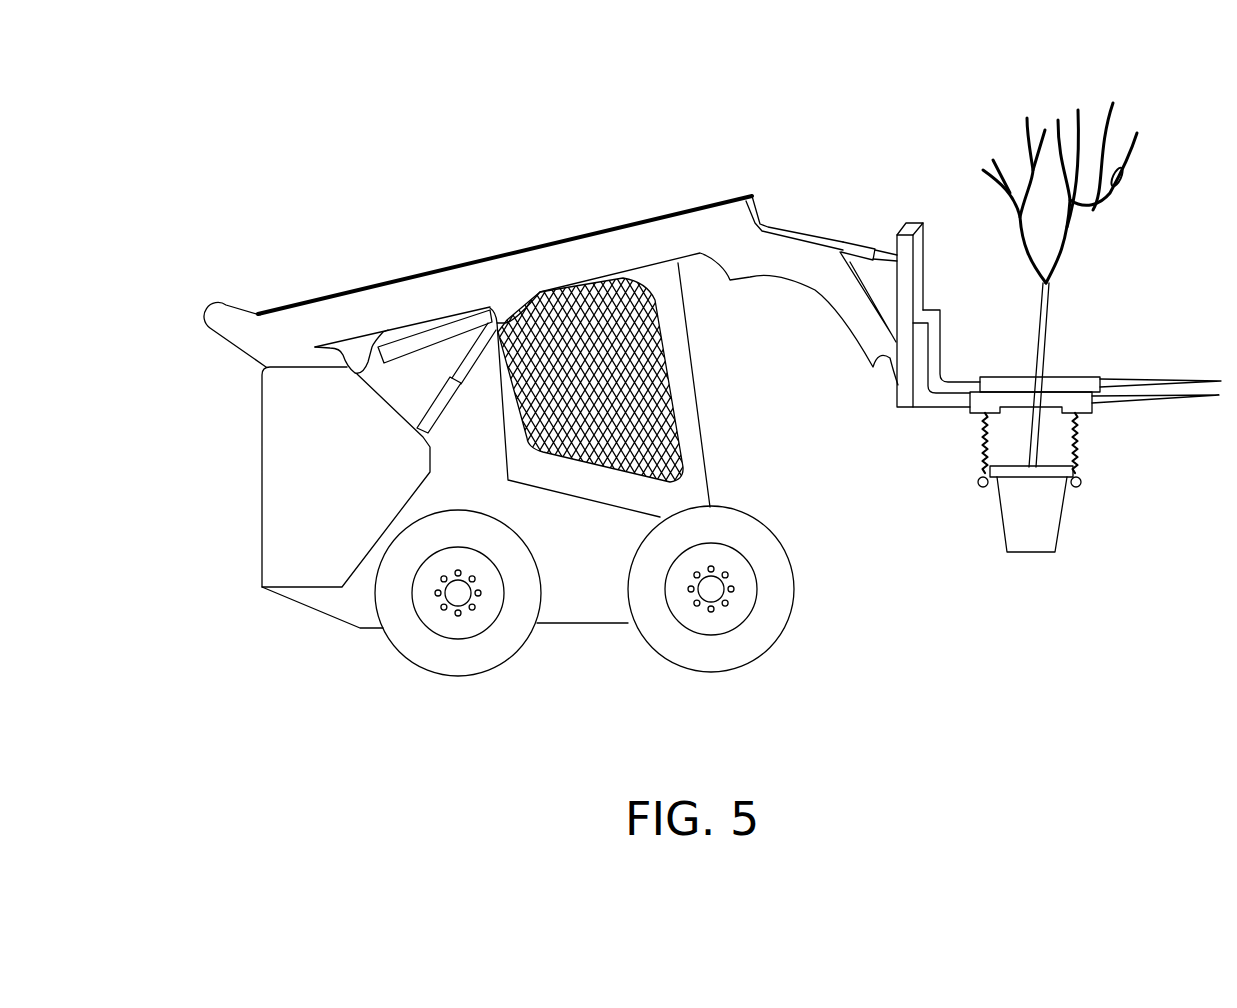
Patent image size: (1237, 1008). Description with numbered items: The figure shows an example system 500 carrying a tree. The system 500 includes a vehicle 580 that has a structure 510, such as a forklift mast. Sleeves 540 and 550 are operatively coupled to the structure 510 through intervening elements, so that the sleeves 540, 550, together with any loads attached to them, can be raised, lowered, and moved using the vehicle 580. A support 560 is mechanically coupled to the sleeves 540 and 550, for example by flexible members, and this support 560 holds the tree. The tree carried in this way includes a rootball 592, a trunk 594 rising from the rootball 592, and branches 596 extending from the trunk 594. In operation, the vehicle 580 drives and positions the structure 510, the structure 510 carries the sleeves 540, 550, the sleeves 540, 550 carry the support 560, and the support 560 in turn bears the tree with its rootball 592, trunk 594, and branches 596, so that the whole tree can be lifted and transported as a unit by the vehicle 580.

The system 500 is at (628, 155).
The structure 510 is at (900, 399).
The sleeve 540 is at (1080, 402).
The sleeve 550 is at (1052, 377).
The support 560 is at (1063, 473).
The vehicle 580 is at (362, 471).
The rootball 592 is at (1050, 524).
The trunk 594 is at (1037, 350).
The branches 596 is at (1095, 210).